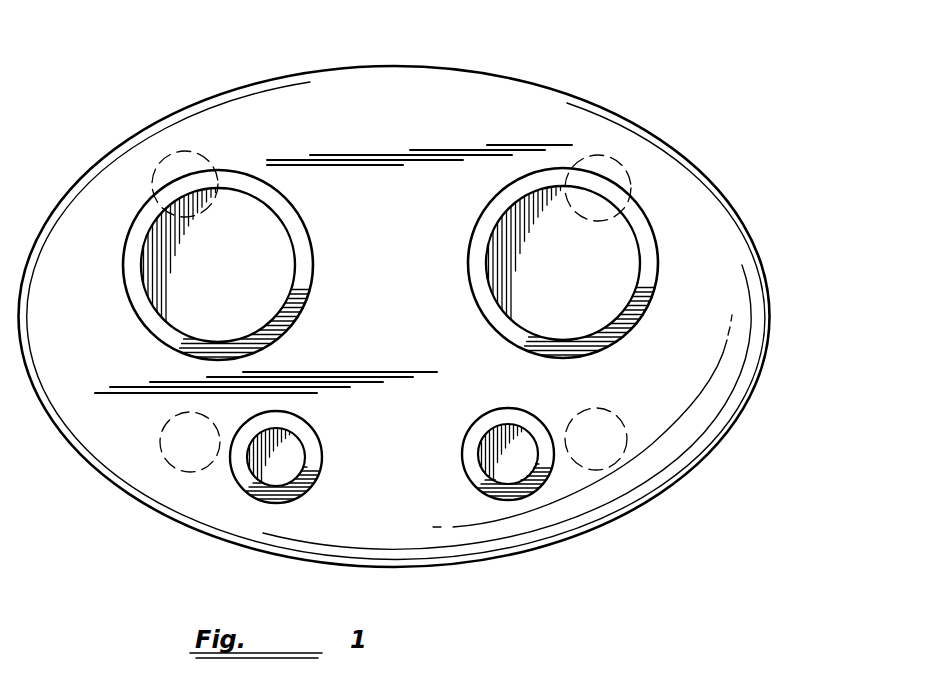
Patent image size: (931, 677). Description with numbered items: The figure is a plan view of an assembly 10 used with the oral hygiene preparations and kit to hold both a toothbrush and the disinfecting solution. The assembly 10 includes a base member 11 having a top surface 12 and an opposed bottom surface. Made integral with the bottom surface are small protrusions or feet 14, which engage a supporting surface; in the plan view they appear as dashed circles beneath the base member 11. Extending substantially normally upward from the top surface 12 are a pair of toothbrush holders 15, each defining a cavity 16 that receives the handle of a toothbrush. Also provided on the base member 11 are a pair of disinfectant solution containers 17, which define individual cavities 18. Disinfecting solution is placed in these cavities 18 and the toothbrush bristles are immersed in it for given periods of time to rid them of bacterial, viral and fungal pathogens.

The assembly 10 is at (552, 66).
The base member 11 is at (757, 411).
The top surface 12 is at (733, 285).
The feet 14 is at (168, 172).
The toothbrush holders 15 is at (321, 452).
The cavity 16 is at (296, 458).
The disinfectant solution containers 17 is at (140, 222).
The cavities 18 is at (270, 263).